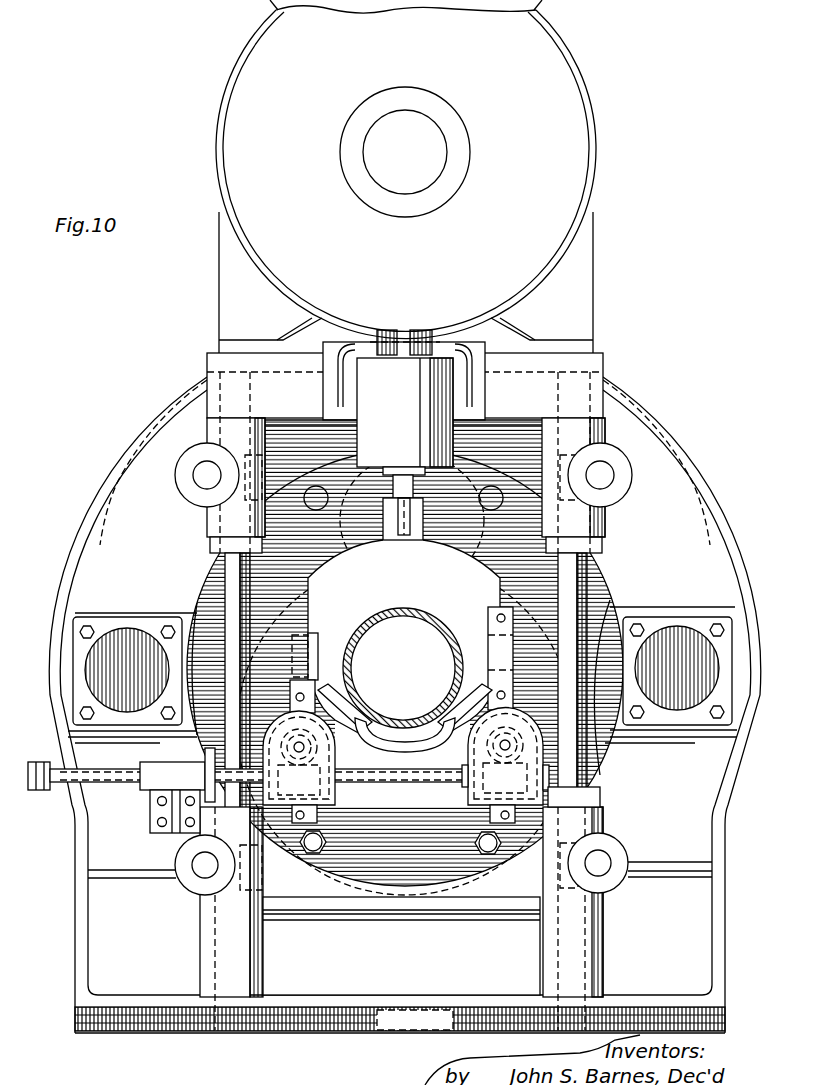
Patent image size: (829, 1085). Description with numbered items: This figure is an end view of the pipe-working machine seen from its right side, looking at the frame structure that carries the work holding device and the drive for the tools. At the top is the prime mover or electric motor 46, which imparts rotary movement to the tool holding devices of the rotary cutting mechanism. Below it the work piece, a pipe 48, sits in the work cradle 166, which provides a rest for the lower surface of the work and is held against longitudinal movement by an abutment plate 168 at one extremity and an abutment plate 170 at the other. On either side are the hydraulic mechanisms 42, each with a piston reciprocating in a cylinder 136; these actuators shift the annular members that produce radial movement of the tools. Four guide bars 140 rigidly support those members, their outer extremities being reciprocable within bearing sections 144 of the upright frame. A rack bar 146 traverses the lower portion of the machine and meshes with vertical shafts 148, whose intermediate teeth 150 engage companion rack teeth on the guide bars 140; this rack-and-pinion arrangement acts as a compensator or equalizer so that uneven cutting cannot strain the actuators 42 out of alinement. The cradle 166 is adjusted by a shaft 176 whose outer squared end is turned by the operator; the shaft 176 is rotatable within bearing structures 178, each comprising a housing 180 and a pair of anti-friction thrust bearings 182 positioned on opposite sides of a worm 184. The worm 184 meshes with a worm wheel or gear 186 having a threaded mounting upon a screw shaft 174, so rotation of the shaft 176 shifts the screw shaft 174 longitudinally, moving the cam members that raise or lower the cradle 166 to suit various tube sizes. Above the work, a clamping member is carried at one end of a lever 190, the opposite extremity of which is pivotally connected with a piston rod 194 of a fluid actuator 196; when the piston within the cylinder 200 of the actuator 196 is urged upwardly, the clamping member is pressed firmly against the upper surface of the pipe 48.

The hydraulic mechanisms 42 is at (85, 650).
The electric motor 46 is at (406, 176).
The pipe 48 is at (402, 612).
The cylinder 136 is at (130, 630).
The guide bars 140 is at (203, 473).
The bearing sections 144 is at (180, 477).
The rack bar 146 is at (145, 1030).
The vertical shafts 148 is at (226, 575).
The intermediate teeth 150 is at (250, 463).
The work cradle 166 is at (402, 742).
The abutment plate 168 is at (385, 718).
The abutment plate 170 is at (500, 645).
The screw shaft 174 is at (303, 744).
The shaft 176 is at (95, 782).
The bearing structures 178 is at (333, 792).
The housing 180 is at (322, 808).
The anti-friction thrust bearings 182 is at (297, 812).
The worm 184 is at (600, 795).
The worm wheel 186 is at (548, 778).
The lever 190 is at (404, 538).
The piston rod 194 is at (418, 488).
The fluid actuator 196 is at (354, 392).
The cylinder 200 is at (405, 402).